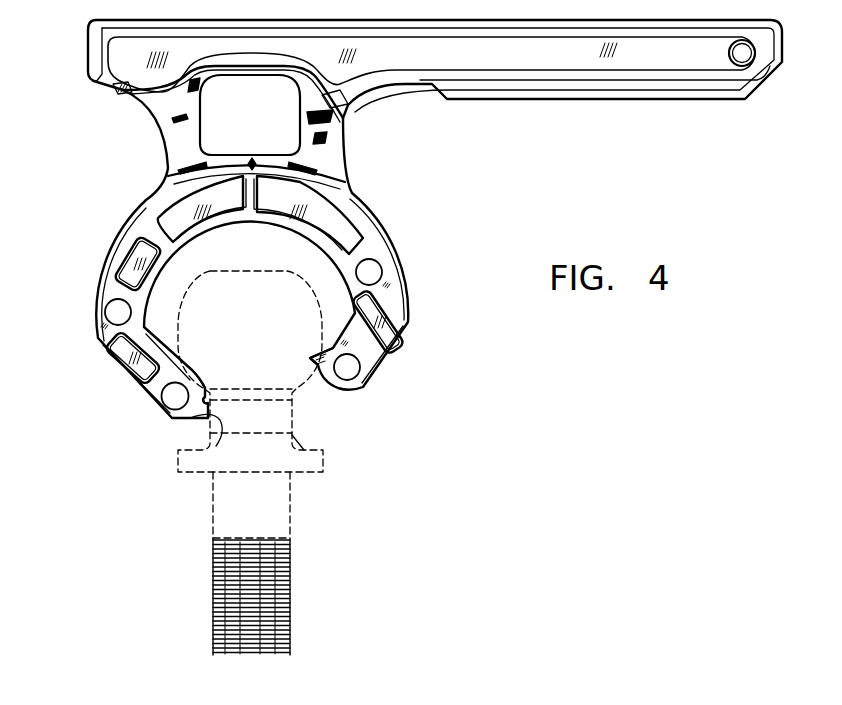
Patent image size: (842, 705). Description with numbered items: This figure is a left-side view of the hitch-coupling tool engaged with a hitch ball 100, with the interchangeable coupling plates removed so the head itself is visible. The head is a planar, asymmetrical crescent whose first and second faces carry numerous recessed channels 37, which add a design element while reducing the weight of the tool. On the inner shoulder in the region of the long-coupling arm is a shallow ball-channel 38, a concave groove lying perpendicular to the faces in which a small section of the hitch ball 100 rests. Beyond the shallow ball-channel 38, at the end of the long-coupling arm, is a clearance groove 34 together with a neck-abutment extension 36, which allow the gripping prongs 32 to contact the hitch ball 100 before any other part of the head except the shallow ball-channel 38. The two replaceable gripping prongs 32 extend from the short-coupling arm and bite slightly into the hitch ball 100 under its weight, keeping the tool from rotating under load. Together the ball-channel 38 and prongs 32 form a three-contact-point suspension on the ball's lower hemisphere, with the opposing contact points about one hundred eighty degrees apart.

The recessed channels 37 is at (167, 227).
The shallow ball-channel 38 is at (160, 392).
The clearance groove 34 is at (210, 414).
The second jaw end 36 is at (190, 421).
The gripping prongs 32 is at (314, 362).
The hitch ball 100 is at (293, 316).